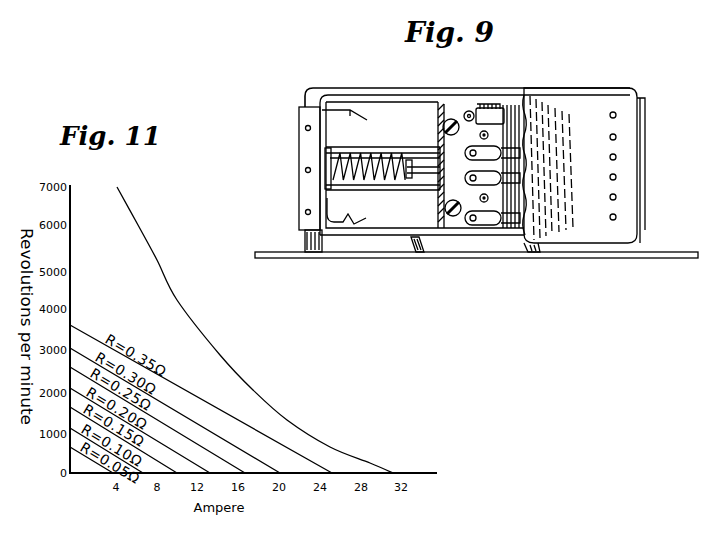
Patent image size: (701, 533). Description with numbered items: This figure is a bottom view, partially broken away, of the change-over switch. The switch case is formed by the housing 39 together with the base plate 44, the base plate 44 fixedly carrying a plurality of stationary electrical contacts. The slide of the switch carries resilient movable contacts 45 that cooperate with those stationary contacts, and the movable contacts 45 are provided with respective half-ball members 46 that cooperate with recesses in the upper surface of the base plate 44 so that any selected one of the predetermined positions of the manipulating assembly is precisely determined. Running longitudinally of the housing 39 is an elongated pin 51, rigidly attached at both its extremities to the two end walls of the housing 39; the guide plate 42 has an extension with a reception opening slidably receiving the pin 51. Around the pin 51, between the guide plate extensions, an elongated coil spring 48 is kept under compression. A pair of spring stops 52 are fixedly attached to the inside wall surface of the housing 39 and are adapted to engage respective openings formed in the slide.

The housing 39 is at (400, 100).
The guide plate 42 is at (327, 174).
The base plate 44 is at (586, 100).
The movable contact 45 is at (496, 113).
The half-ball member 46 is at (468, 111).
The coil spring 48 is at (390, 158).
The pin 51 is at (417, 165).
The spring stop 52 is at (350, 108).